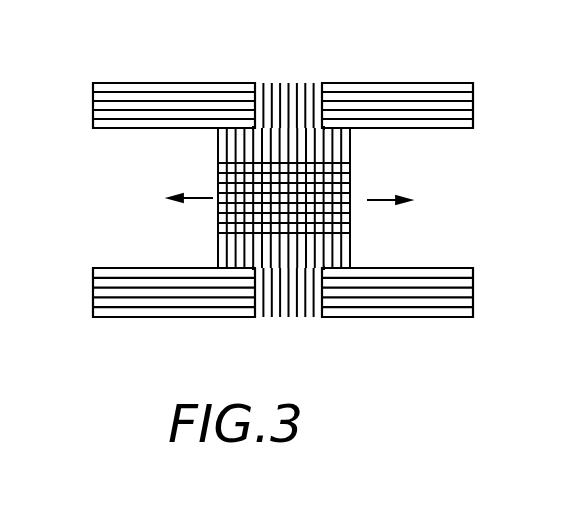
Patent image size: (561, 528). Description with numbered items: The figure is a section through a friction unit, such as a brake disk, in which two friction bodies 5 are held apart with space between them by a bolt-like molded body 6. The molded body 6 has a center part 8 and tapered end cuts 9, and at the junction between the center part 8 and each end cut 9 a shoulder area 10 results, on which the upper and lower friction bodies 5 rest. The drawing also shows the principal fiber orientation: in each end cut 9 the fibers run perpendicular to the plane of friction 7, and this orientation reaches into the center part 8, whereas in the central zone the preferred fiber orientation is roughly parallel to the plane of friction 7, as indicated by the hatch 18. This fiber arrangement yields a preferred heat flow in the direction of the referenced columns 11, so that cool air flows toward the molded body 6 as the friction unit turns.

The friction body 5 is at (152, 113).
The molded body 6 is at (220, 163).
The plane of friction 7 is at (433, 83).
The center part 8 is at (290, 148).
The end cut 9 is at (280, 300).
The shoulder area 10 is at (233, 123).
The column 11 is at (197, 198).
The hatch 18 is at (307, 193).